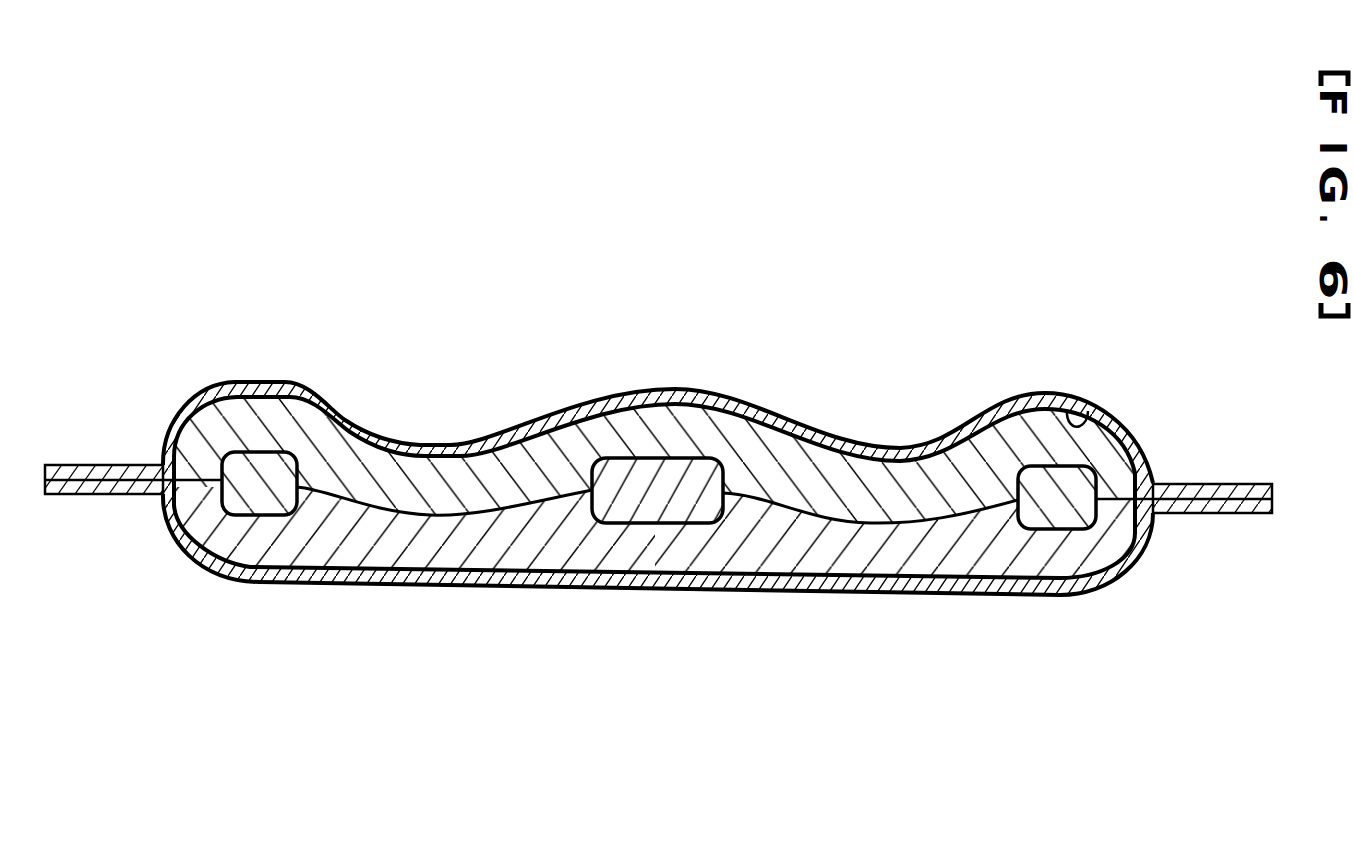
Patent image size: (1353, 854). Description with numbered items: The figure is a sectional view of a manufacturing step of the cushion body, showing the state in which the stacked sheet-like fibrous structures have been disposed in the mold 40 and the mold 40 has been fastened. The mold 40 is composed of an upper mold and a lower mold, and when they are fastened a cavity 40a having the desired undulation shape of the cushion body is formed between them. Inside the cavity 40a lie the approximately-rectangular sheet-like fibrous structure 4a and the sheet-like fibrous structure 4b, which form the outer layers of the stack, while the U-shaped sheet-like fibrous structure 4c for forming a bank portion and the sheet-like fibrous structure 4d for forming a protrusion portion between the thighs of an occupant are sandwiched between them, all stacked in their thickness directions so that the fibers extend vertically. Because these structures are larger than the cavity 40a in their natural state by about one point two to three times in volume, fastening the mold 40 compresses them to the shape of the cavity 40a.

The mold 40 is at (255, 382).
The cavity 40a is at (1087, 421).
The sheet-like fibrous structure 4a is at (720, 420).
The sheet-like fibrous structure 4b is at (835, 568).
The U-shaped sheet-like fibrous structure 4c is at (265, 510).
The sheet-like fibrous structure 4d is at (627, 512).